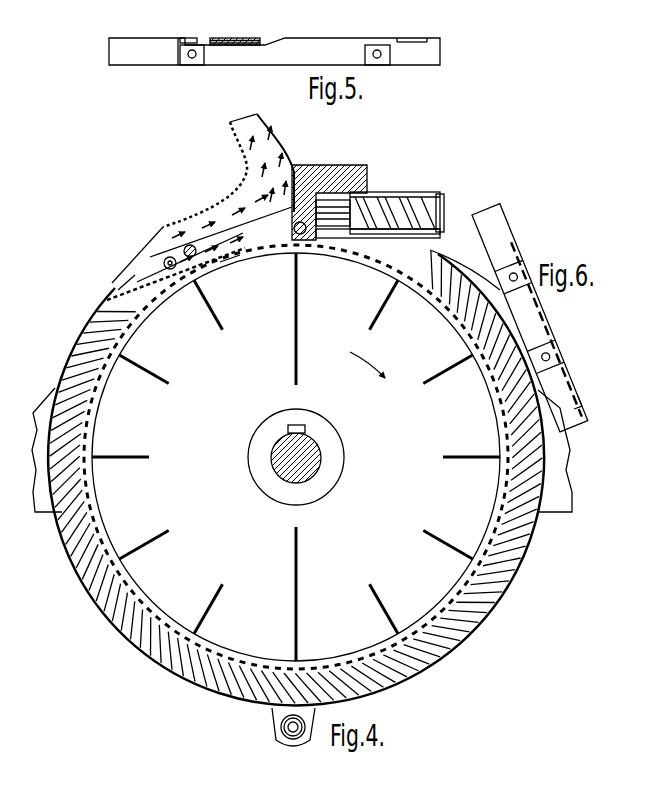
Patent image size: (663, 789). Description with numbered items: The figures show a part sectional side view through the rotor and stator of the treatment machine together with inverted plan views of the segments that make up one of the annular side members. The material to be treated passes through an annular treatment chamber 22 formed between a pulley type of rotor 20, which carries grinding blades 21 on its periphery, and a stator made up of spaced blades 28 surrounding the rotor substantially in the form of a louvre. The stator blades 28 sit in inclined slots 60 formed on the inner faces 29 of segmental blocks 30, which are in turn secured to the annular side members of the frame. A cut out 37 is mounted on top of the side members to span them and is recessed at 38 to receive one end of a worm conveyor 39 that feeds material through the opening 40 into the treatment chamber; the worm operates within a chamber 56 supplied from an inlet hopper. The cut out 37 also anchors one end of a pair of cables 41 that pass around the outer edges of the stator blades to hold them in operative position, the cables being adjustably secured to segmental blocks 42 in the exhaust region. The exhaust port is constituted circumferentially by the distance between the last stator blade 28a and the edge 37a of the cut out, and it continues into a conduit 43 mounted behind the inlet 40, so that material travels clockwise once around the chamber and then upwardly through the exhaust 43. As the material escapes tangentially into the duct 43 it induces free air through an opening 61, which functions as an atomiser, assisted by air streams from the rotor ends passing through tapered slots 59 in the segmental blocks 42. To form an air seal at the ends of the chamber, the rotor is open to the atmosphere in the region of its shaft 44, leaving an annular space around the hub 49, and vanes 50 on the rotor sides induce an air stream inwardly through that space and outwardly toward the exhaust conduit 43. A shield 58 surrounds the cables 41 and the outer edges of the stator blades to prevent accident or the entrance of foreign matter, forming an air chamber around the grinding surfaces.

In FIG. 4, the rotor 20 is at (236, 258).
In FIG. 4, the grinding blades 21 is at (160, 298).
In FIG. 4, the annular treatment chamber 22 is at (167, 627).
In FIG. 4, the stator blades 28 is at (480, 286).
In FIG. 4, the last stator blade 28a is at (162, 282).
In FIG. 6, the inner faces 29 is at (506, 236).
In FIG. 6, the segmental blocks 30 is at (568, 420).
In FIG. 4, the cut out 37 is at (320, 168).
In FIG. 4, the edge of the cut out 37a is at (297, 240).
In FIG. 4, the recess 38 is at (367, 187).
In FIG. 4, the worm conveyor 39 is at (444, 212).
In FIG. 4, the opening 40 is at (340, 238).
In FIG. 4, the cables 41 is at (145, 292).
In FIG. 5, the segmental blocks 42 is at (322, 50).
In FIG. 4, the segmental blocks 42 is at (213, 228).
In FIG. 4, the exhaust conduit 43 is at (257, 158).
In FIG. 4, the shaft 44 is at (302, 472).
In FIG. 4, the hub 49 is at (335, 440).
In FIG. 4, the vanes 50 is at (133, 456).
In FIG. 4, the chamber 56 is at (408, 188).
In FIG. 4, the shield 58 is at (492, 602).
In FIG. 5, the tapered slots 59 is at (254, 41).
In FIG. 6, the inclined slots 60 is at (550, 344).
In FIG. 4, the opening 61 is at (168, 232).